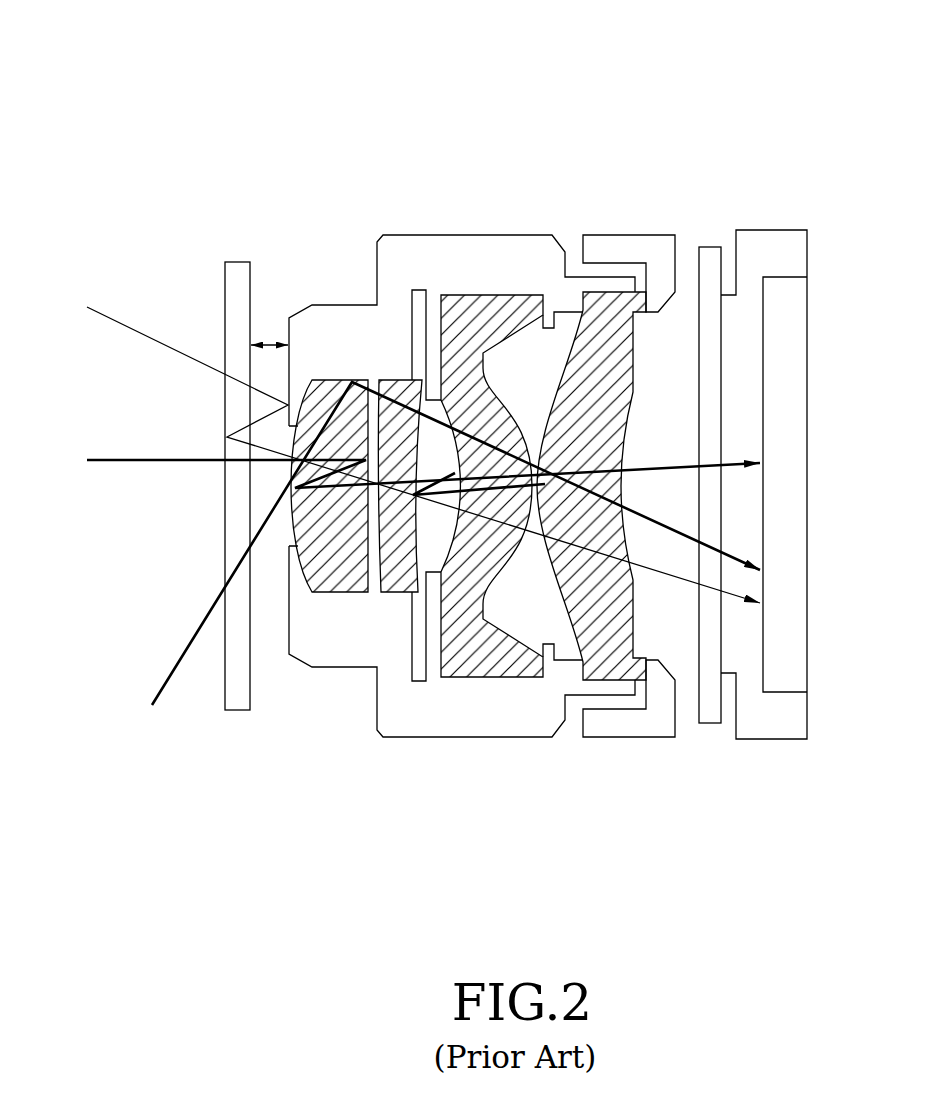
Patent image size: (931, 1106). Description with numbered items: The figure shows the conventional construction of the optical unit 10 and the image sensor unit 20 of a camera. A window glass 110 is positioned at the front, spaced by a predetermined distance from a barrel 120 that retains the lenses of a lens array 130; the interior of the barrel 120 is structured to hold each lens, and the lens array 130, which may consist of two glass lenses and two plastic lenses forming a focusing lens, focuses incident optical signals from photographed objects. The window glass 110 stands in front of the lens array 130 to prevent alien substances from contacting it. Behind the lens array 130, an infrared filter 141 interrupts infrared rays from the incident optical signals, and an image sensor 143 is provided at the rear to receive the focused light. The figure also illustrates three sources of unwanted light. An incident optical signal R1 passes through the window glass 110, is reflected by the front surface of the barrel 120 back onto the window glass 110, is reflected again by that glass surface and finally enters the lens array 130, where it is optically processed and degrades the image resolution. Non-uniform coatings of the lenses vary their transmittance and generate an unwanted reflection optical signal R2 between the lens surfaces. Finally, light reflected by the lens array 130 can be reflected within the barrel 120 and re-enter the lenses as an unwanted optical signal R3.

The optical unit 10 is at (467, 447).
The image sensor unit 20 is at (667, 87).
The window glass 110 is at (237, 262).
The barrel 120 is at (466, 235).
The lens array 130 is at (612, 667).
The infrared filter 141 is at (710, 247).
The image sensor 143 is at (809, 485).
The incident optical signal R1 is at (405, 447).
The unwanted reflection optical signal R2 is at (405, 472).
The unwanted optical signal R3 is at (439, 553).